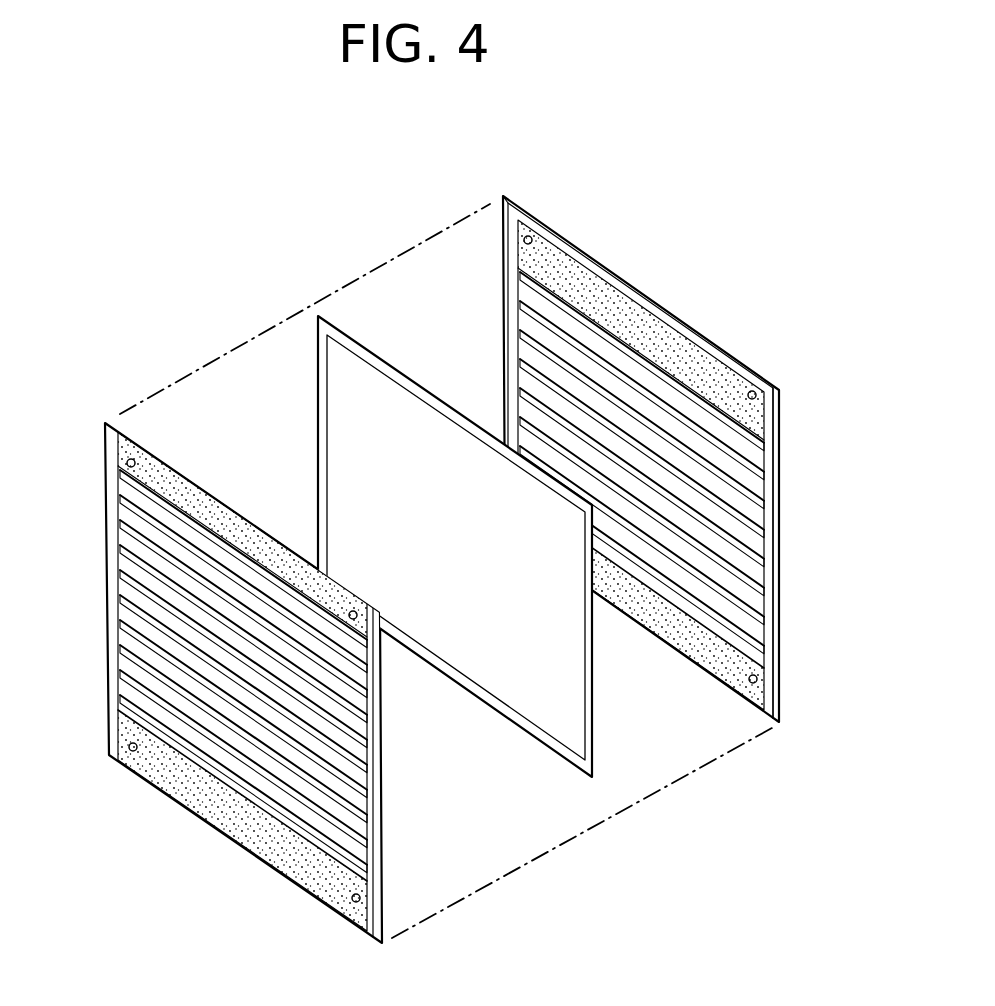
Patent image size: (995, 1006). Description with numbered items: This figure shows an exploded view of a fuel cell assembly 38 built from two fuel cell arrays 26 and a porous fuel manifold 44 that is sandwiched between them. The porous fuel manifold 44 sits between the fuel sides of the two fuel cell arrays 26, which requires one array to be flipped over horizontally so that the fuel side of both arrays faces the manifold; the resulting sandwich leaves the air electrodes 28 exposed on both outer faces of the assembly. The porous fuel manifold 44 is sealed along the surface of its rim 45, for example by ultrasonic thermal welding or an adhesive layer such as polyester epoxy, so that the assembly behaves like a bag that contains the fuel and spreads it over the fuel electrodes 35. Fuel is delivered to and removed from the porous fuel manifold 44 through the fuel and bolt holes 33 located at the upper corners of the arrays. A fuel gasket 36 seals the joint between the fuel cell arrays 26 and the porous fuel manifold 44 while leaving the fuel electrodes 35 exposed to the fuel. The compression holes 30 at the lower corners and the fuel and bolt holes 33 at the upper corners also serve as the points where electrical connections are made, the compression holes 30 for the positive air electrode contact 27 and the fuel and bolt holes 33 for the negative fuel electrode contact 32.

The fuel cell array 26 is at (428, 925).
The positive air electrode contact 27 is at (320, 882).
The air electrode 28 is at (363, 728).
The compression hole 30 is at (361, 899).
The negative fuel electrode contact 32 is at (177, 470).
The fuel and bolt hole 33 is at (127, 463).
The fuel electrode 35 is at (760, 473).
The fuel gasket 36 is at (776, 588).
The fuel cell assembly 38 is at (190, 340).
The porous fuel manifold 44 is at (600, 687).
The rim 45 is at (590, 773).